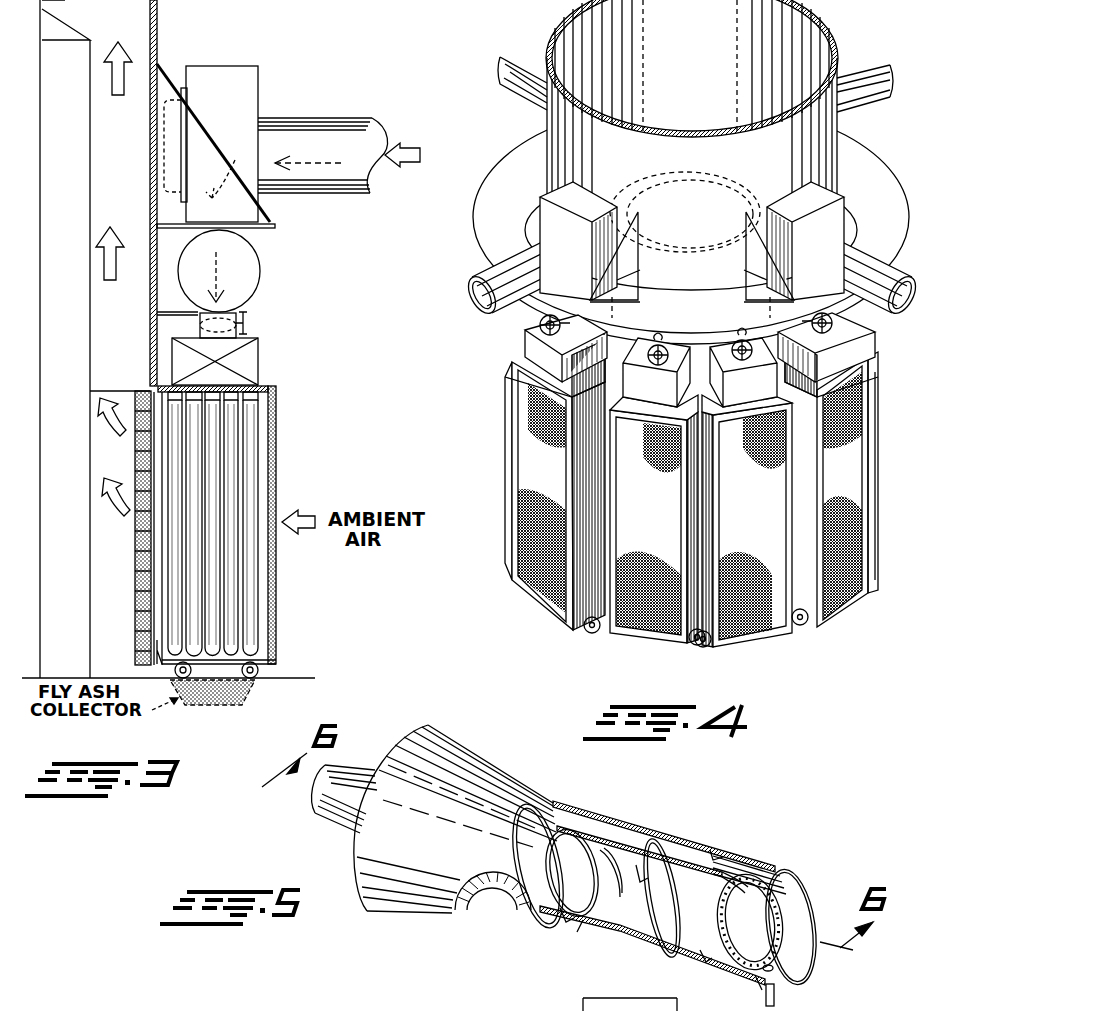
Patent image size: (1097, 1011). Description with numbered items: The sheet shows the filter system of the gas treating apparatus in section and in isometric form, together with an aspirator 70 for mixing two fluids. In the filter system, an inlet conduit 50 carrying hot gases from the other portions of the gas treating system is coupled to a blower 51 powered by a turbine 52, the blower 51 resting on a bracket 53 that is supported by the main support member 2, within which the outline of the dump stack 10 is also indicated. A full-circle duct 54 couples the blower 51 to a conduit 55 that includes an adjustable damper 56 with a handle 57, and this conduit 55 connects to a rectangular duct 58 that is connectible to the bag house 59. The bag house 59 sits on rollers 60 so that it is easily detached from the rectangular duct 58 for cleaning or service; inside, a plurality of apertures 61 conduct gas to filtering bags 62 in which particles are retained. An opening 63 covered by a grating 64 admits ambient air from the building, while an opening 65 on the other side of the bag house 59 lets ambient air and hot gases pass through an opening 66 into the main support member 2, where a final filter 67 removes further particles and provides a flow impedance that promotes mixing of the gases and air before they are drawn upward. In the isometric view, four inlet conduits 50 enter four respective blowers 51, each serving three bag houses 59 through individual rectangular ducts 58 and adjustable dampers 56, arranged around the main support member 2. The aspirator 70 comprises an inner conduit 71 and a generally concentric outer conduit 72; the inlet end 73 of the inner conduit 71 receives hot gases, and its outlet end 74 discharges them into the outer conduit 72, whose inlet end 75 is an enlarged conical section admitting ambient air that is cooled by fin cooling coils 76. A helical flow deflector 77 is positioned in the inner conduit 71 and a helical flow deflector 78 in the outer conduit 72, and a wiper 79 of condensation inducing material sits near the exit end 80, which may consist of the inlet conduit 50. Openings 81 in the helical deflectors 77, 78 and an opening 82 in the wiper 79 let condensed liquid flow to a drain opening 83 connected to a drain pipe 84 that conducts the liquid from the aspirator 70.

In FIG. 4, the main support member 2 is at (547, 124).
In FIG. 3, the dump stack 10 is at (65, 8).
In FIG. 4, the dump stack 10 is at (665, 180).
In FIG. 3, the inlet conduit 50 is at (312, 118).
In FIG. 4, the inlet conduit 50 is at (880, 98).
In FIG. 3, the blower 51 is at (237, 66).
In FIG. 4, the blower 51 is at (540, 199).
In FIG. 5, the blower 51 is at (583, 1003).
In FIG. 3, the turbine 52 is at (166, 96).
In FIG. 3, the bracket 53 is at (270, 219).
In FIG. 3, the 360° duct 54 is at (261, 268).
In FIG. 3, the conduit 55 is at (157, 313).
In FIG. 3, the adjustable damper 56 is at (242, 333).
In FIG. 3, the handle 57 is at (242, 315).
In FIG. 4, the handle 57 is at (545, 322).
In FIG. 3, the rectangular duct 58 is at (258, 358).
In FIG. 4, the rectangular duct 58 is at (530, 352).
In FIG. 3, the bag house 59 is at (268, 395).
In FIG. 4, the bag house 59 is at (520, 365).
In FIG. 3, the rollers 60 is at (255, 680).
In FIG. 4, the rollers 60 is at (592, 633).
In FIG. 3, the apertures 61 is at (256, 396).
In FIG. 3, the filtering bags 62 is at (253, 448).
In FIG. 3, the opening 63 is at (270, 636).
In FIG. 3, the grating 64 is at (276, 609).
In FIG. 4, the grating 64 is at (515, 530).
In FIG. 3, the opening 65 is at (163, 638).
In FIG. 3, the opening 66 is at (155, 616).
In FIG. 3, the final filter 67 is at (142, 592).
In FIG. 5, the aspirator 70 is at (510, 764).
In FIG. 5, the inner conduit 71 is at (600, 832).
In FIG. 5, the outer conduit 72 is at (632, 826).
In FIG. 5, the inlet end 73 is at (356, 768).
In FIG. 5, the outlet end 74 is at (645, 934).
In FIG. 5, the inlet end 75 is at (455, 742).
In FIG. 5, the fin cooling coils 76 is at (510, 913).
In FIG. 5, the helical flow deflector 77 is at (578, 838).
In FIG. 5, the helical flow deflector 78 is at (665, 846).
In FIG. 5, the wiper 79 is at (780, 896).
In FIG. 5, the exit end 80 is at (755, 862).
In FIG. 5, the openings 81 is at (583, 921).
In FIG. 5, the opening 82 is at (754, 972).
In FIG. 5, the drain opening 83 is at (774, 968).
In FIG. 5, the drain pipe 84 is at (775, 995).